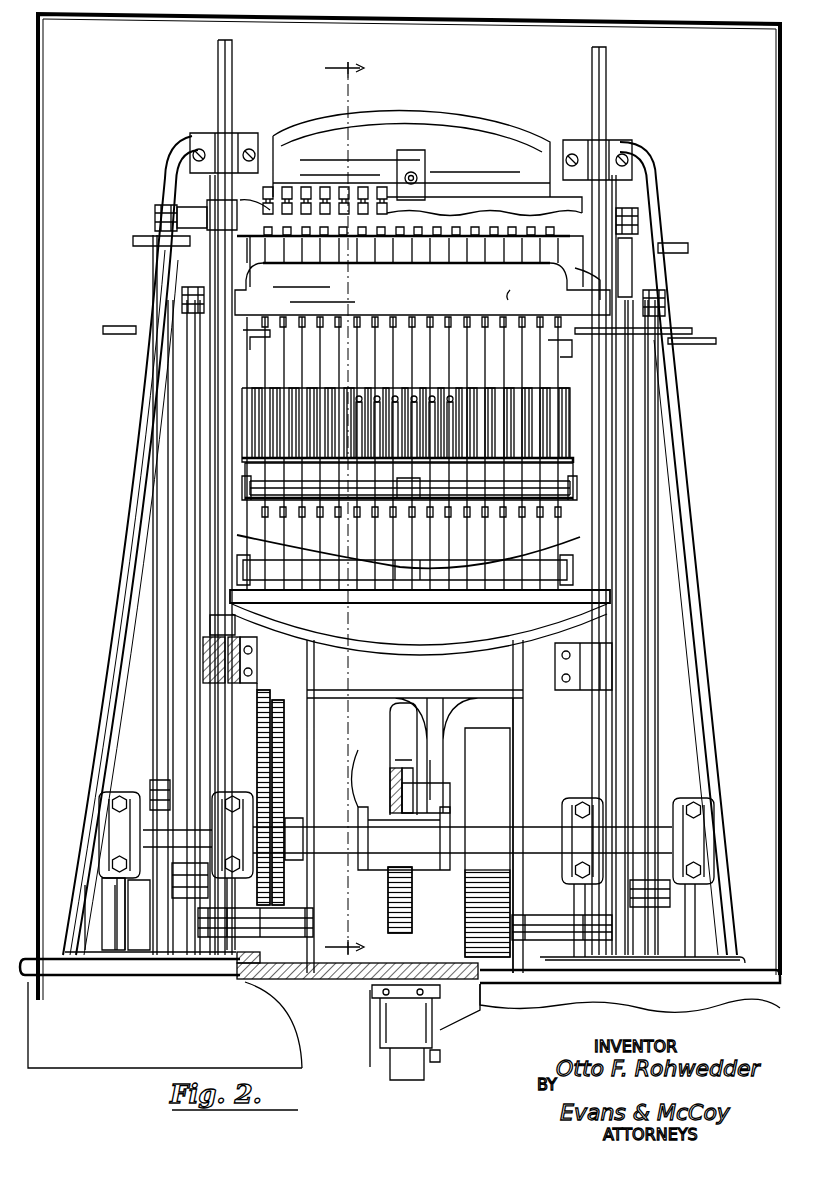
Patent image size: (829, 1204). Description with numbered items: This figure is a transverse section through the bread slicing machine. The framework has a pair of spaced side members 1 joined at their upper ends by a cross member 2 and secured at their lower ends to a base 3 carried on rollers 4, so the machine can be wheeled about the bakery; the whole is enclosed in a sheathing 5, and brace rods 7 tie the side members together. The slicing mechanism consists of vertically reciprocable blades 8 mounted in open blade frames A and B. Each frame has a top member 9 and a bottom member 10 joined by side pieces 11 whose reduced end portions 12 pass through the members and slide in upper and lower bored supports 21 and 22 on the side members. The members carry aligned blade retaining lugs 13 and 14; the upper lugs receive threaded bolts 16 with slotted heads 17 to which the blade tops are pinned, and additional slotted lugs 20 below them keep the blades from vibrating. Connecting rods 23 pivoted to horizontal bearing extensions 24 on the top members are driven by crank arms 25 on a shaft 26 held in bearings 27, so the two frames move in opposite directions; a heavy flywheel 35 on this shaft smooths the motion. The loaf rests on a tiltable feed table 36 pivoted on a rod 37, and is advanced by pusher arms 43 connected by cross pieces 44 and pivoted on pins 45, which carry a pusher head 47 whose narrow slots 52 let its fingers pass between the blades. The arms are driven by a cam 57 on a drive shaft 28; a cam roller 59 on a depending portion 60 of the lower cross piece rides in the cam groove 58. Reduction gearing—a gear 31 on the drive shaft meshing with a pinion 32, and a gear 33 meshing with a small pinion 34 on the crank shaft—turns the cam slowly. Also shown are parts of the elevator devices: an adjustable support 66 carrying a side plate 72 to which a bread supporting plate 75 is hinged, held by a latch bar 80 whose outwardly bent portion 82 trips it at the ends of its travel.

The side members 1 is at (690, 498).
The cross member 2 is at (478, 130).
The base 3 is at (476, 977).
The rollers 4 is at (436, 1056).
The sheathing 5 is at (778, 176).
The brace rods 7 is at (478, 585).
The blades 8 is at (472, 530).
The top members 9 is at (462, 298).
The bottom members 10 is at (402, 620).
The side pieces 11 is at (600, 412).
The end portions 12 is at (222, 745).
The upper blade retaining lugs 13 is at (352, 195).
The lower blade retaining lugs 14 is at (420, 603).
The threaded bolts 16 is at (300, 185).
The slotted heads 17 is at (432, 198).
The slotted lugs 20 is at (312, 225).
The upper bored supports 21 is at (600, 150).
The lower bored supports 22 is at (612, 660).
The connecting rods 23 is at (652, 692).
The horizontal bearing extensions 24 is at (666, 305).
The crank arms 25 is at (628, 912).
The shaft 26 is at (525, 842).
The bearings 27 is at (640, 838).
The drive shaft 28 is at (368, 773).
The gear 31 is at (272, 765).
The pinion 32 is at (285, 790).
The gear 33 is at (258, 700).
The small pinion 34 is at (296, 856).
The flywheel 35 is at (472, 900).
The feed table 36 is at (575, 452).
The rod 37 is at (578, 478).
The pusher arms 43 is at (536, 754).
The cross pieces 44 is at (415, 806).
The pins 45 is at (630, 998).
The pusher head 47 is at (255, 400).
The narrow slots 52 is at (258, 438).
The cam 57 is at (395, 705).
The cam groove 58 is at (385, 787).
The cam roller 59 is at (422, 798).
The depending portion 60 is at (442, 748).
The support 66 is at (710, 344).
The side plate 72 is at (670, 330).
The bread supporting plate 75 is at (640, 358).
The latch bar 80 is at (585, 278).
The outwardly bent portion 82 is at (690, 248).
The blade frame A is at (503, 285).
The blade frame B is at (297, 185).